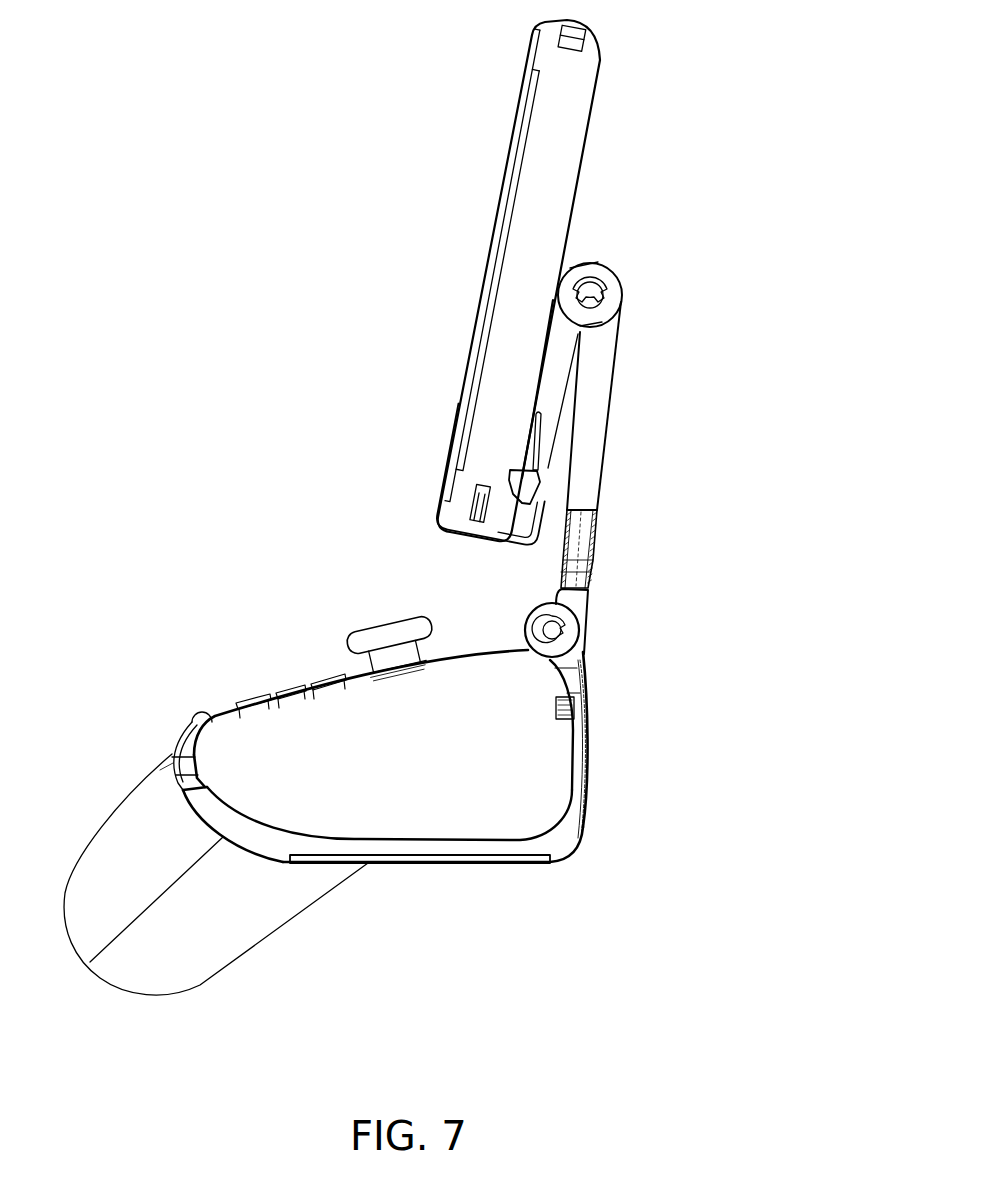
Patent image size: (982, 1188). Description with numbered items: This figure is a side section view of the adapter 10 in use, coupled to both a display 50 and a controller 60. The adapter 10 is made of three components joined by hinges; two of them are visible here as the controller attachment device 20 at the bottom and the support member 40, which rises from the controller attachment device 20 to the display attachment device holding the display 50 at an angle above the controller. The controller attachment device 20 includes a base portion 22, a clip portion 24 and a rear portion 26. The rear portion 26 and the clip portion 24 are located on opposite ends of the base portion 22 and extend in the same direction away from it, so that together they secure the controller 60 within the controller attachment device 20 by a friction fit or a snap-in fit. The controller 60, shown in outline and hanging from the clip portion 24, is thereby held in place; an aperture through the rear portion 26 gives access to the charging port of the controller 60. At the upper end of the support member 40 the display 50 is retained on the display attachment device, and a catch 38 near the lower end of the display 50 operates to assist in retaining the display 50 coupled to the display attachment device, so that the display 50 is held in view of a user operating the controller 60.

The adapter 10 is at (696, 132).
The controller attachment device 20 is at (476, 921).
The base portion 22 is at (407, 848).
The clip portion 24 is at (196, 728).
The rear portion 26 is at (577, 753).
The catch 38 is at (536, 472).
The support member 40 is at (636, 443).
The display 50 is at (537, 203).
The controller 60 is at (210, 947).